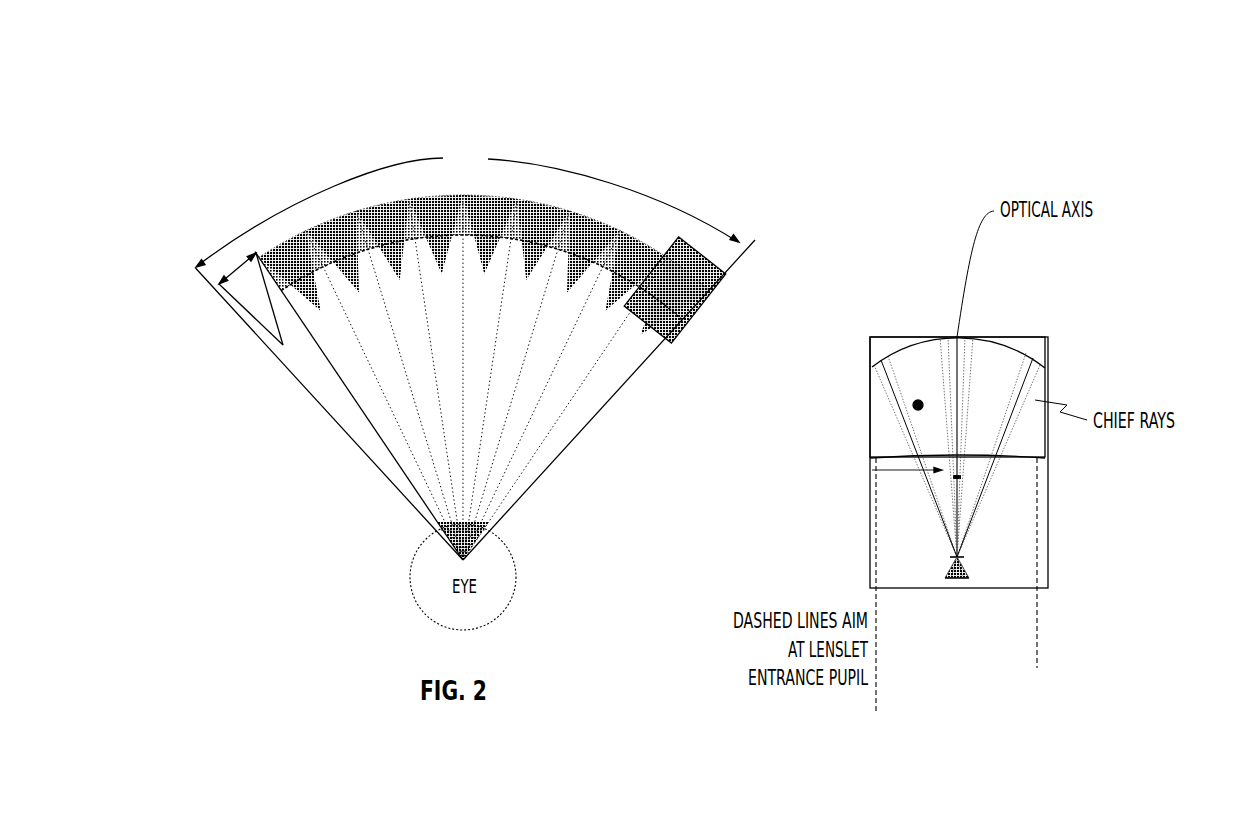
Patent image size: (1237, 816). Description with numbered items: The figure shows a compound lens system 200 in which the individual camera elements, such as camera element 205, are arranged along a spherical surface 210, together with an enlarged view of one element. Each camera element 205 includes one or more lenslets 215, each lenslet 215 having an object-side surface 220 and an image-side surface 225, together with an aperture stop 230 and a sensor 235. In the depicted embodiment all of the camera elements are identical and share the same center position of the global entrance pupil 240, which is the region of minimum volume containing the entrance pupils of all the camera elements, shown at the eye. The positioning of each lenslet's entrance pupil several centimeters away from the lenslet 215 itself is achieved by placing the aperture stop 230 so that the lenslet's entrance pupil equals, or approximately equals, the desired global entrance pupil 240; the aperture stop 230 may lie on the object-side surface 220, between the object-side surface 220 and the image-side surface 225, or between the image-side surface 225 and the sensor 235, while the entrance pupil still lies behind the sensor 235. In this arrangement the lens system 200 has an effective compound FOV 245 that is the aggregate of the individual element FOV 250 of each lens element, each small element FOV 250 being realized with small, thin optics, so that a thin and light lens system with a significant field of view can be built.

The compound lens system 200 is at (233, 178).
The camera element 205 is at (708, 300).
The spherical surface 210 is at (280, 362).
The lenslet 215 is at (913, 405).
The object-side surface 220 is at (1040, 297).
The image-side surface 225 is at (1045, 457).
The aperture stop 230 is at (972, 560).
The sensor 235 is at (957, 596).
The global entrance pupil 240 is at (452, 560).
The compound FOV 245 is at (467, 207).
The element FOV 250 is at (253, 334).